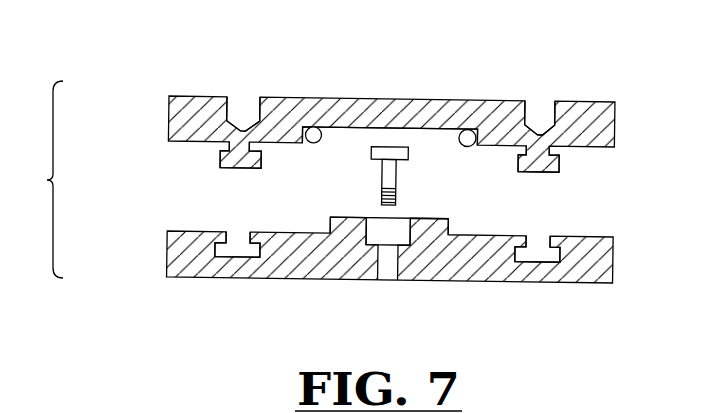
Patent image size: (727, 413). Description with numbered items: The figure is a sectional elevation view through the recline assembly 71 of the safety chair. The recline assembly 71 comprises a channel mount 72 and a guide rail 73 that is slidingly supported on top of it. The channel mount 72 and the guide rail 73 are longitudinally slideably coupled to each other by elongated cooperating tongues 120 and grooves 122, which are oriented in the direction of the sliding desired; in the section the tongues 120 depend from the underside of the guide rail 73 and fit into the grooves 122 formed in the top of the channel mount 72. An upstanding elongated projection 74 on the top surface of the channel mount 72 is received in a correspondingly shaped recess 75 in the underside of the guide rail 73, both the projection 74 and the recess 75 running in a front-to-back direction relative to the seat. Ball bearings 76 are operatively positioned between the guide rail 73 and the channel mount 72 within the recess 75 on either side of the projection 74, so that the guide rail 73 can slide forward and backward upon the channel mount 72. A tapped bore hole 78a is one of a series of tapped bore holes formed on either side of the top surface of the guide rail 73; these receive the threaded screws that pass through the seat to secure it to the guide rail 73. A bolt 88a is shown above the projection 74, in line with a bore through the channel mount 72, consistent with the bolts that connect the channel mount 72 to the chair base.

The recline assembly 71 is at (41, 179).
The channel mount 72 is at (367, 286).
The guide rail 73 is at (359, 93).
The upstanding elongated projection 74 is at (424, 228).
The recess 75 is at (377, 130).
The ball bearings 76 is at (313, 139).
The tapped bore hole 78a is at (249, 110).
The bolt 88a is at (392, 172).
The tongues 120 is at (232, 163).
The grooves 122 is at (247, 256).